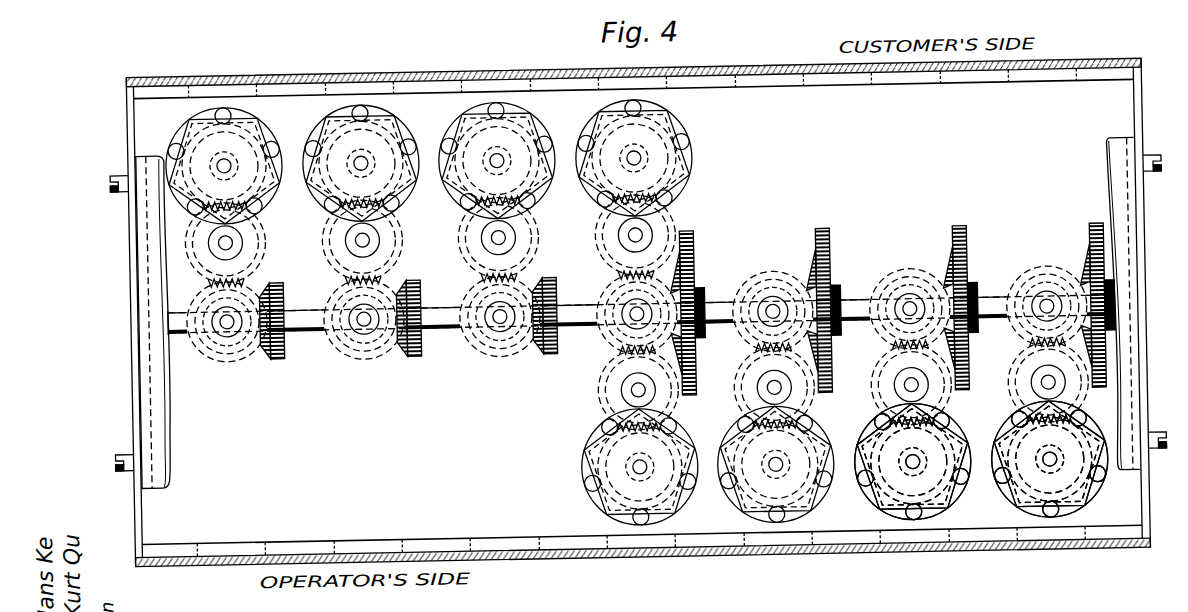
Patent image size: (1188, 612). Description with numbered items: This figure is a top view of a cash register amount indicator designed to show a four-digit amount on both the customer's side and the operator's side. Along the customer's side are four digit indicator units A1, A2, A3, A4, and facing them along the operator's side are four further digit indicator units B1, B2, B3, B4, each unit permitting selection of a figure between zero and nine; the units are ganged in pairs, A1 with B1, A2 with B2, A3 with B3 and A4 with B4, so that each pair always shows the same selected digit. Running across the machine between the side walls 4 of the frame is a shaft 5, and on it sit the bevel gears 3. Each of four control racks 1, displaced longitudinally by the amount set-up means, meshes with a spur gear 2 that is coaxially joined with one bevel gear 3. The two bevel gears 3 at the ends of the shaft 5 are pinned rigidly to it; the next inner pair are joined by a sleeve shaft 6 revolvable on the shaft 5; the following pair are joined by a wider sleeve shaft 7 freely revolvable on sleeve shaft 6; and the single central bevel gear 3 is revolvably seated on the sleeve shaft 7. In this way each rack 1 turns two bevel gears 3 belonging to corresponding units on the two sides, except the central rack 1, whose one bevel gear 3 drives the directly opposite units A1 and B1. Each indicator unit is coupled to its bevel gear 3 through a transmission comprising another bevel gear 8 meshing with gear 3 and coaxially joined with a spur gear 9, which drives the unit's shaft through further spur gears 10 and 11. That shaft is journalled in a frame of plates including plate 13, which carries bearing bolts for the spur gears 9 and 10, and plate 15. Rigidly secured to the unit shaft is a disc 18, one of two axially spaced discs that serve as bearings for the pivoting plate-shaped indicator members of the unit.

The control rack 1 is at (696, 256).
The spur gear 2 is at (701, 290).
The bevel gear 3 is at (806, 270).
The side wall 4 is at (131, 372).
The shaft 5 is at (183, 326).
The sleeve shaft 6 is at (432, 303).
The wider sleeve shaft 7 is at (568, 303).
The bevel gear 8 is at (1012, 335).
The spur gear 9 is at (1098, 486).
The spur gear 10 is at (1010, 383).
The spur gear 11 is at (1010, 500).
The plate 13 is at (168, 436).
The plate 15 is at (166, 474).
The disc 18 is at (862, 492).
The digit indicator unit A1 is at (646, 104).
The digit indicator unit A2 is at (509, 104).
The digit indicator unit A3 is at (375, 104).
The digit indicator unit A4 is at (238, 104).
The digit indicator unit B1 is at (648, 521).
The digit indicator unit B2 is at (782, 522).
The digit indicator unit B3 is at (915, 522).
The digit indicator unit B4 is at (1058, 522).